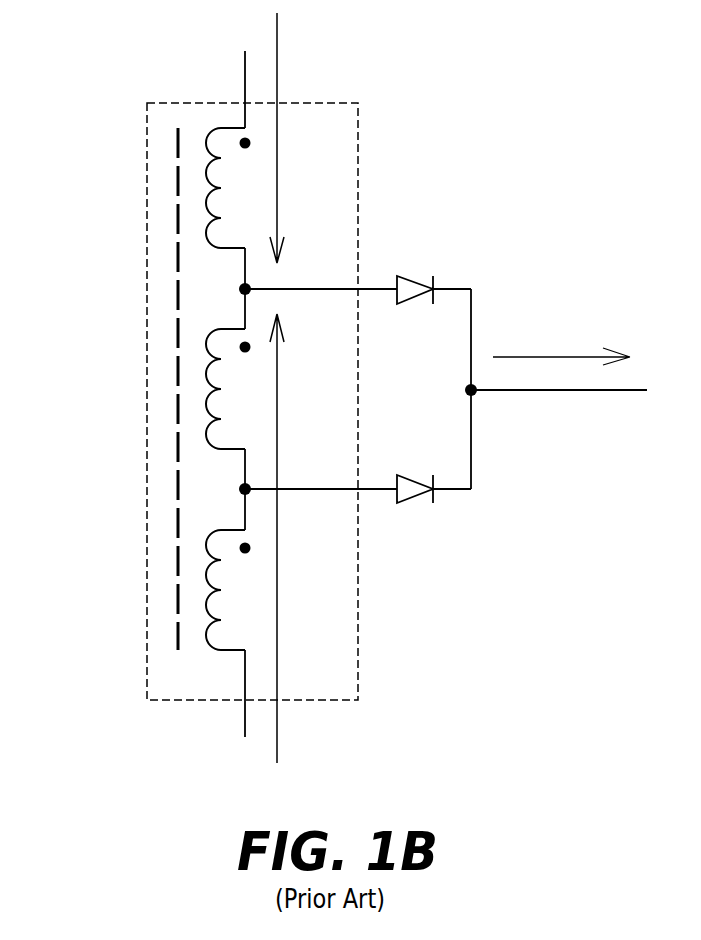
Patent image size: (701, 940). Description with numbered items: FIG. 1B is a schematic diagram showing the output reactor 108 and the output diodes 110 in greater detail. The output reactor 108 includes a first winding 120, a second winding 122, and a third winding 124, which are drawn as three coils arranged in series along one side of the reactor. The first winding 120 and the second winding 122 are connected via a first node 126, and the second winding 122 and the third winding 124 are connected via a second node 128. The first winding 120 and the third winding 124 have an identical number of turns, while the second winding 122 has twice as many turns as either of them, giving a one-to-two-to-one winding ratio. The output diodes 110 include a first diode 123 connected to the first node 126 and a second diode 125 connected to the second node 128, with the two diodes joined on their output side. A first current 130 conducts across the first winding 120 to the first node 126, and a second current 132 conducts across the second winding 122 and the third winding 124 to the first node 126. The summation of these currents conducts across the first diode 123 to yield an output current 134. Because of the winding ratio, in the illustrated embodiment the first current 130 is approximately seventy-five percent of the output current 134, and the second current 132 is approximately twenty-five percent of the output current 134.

The output reactor 108 is at (187, 102).
The output diodes 110 is at (433, 160).
The first winding 120 is at (202, 170).
The second winding 122 is at (202, 372).
The third winding 124 is at (202, 572).
The first diode 123 is at (412, 278).
The second diode 125 is at (410, 500).
The first node 126 is at (245, 289).
The second node 128 is at (245, 489).
The first current 130 is at (278, 67).
The second current 132 is at (278, 744).
The output current 134 is at (533, 356).